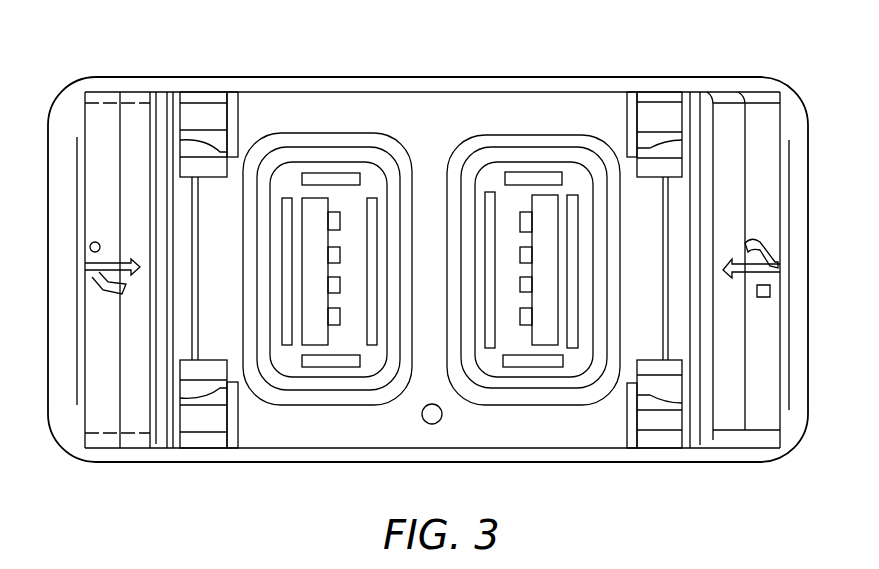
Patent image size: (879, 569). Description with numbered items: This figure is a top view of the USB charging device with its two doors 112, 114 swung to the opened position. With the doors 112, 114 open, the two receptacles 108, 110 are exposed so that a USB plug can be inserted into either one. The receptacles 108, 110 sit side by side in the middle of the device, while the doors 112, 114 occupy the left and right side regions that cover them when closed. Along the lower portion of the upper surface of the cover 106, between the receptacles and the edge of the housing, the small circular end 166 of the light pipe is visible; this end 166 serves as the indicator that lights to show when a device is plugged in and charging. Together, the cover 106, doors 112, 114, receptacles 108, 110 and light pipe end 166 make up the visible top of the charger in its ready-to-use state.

The cover 106 is at (320, 425).
The receptacle 108 is at (372, 178).
The receptacle 110 is at (575, 173).
The door 112 is at (95, 157).
The door 114 is at (731, 142).
The end of the light pipe 166 is at (442, 413).